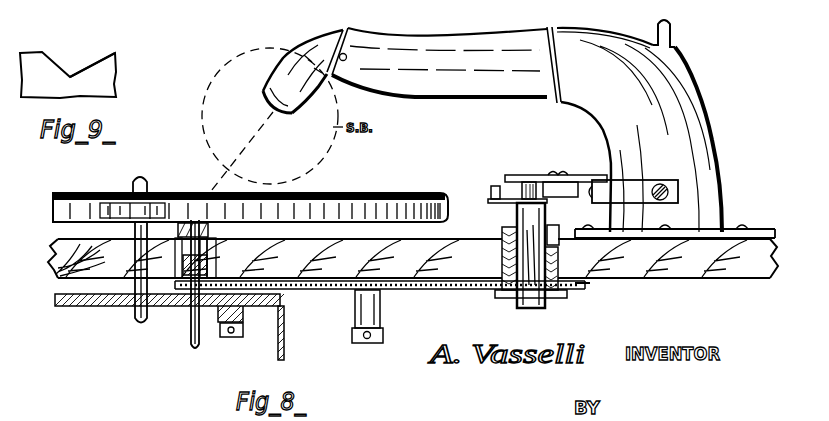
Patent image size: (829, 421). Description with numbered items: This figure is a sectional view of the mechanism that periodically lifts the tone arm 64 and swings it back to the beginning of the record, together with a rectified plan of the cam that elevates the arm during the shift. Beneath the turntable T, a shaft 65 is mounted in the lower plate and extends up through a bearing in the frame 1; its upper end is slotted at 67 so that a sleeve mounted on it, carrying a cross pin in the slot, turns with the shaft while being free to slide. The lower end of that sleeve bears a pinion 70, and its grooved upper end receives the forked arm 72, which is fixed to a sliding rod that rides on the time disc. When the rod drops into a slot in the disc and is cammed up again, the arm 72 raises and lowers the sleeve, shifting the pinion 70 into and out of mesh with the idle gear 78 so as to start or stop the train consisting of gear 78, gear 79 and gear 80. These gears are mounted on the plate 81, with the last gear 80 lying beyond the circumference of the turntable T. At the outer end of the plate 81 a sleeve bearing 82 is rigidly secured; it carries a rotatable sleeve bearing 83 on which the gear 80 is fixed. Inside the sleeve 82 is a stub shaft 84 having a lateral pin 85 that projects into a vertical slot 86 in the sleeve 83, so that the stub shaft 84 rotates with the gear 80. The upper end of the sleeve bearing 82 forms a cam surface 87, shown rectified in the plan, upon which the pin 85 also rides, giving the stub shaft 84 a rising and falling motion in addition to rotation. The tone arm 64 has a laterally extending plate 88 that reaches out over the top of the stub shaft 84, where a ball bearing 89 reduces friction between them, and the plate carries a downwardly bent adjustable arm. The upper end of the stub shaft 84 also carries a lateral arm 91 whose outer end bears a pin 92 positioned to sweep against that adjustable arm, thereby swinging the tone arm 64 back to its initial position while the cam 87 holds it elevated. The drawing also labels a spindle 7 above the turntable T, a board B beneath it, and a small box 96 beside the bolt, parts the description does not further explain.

In FIG. 8, the frame 1 is at (86, 308).
In FIG. 8, the spindle 7 is at (150, 183).
In FIG. 8, the tone arm 64 is at (452, 28).
In FIG. 8, the shaft 65 is at (191, 340).
In FIG. 8, the slot 67 is at (180, 250).
In FIG. 8, the pinion 70 is at (155, 278).
In FIG. 8, the arm 72 is at (205, 230).
In FIG. 8, the idle gear 78 is at (222, 321).
In FIG. 8, the gear 79 is at (313, 293).
In FIG. 8, the gear 80 is at (584, 285).
In FIG. 8, the plate 81 is at (417, 293).
In FIG. 9, the sleeve bearing 82 is at (68, 75).
In FIG. 8, the sleeve bearing 82 is at (510, 302).
In FIG. 8, the sleeve bearing 83 is at (500, 229).
In FIG. 8, the stub shaft 84 is at (530, 308).
In FIG. 8, the lateral pin 85 is at (560, 237).
In FIG. 8, the slot 86 is at (557, 225).
In FIG. 9, the cam surface 87 is at (89, 66).
In FIG. 8, the cam surface 87 is at (530, 247).
In FIG. 8, the laterally extending plate 88 is at (513, 174).
In FIG. 8, the ball bearing 89 is at (528, 182).
In FIG. 8, the lateral arm 91 is at (505, 204).
In FIG. 8, the pin 92 is at (490, 192).
In FIG. 8, the box 96 is at (560, 186).
In FIG. 8, the turntable T is at (332, 194).
In FIG. 8, the board B is at (56, 238).